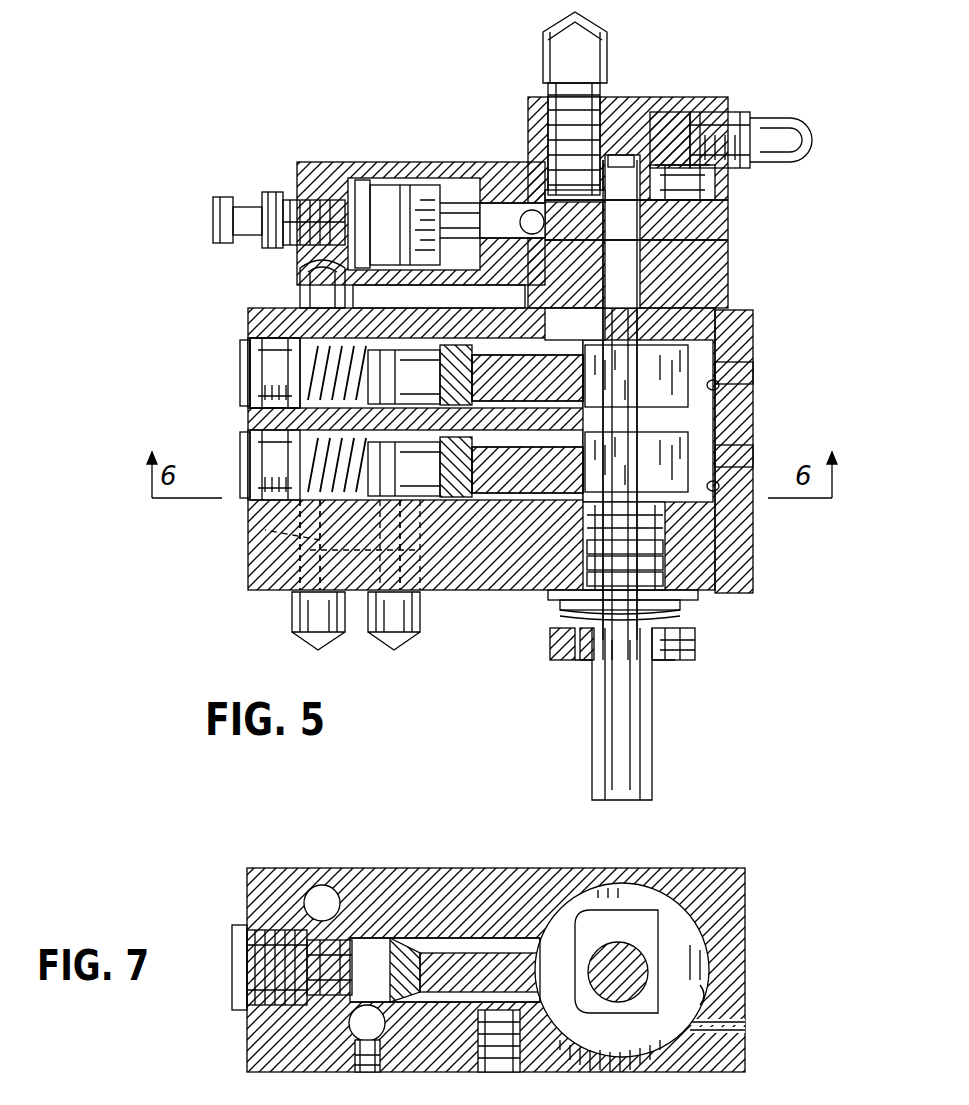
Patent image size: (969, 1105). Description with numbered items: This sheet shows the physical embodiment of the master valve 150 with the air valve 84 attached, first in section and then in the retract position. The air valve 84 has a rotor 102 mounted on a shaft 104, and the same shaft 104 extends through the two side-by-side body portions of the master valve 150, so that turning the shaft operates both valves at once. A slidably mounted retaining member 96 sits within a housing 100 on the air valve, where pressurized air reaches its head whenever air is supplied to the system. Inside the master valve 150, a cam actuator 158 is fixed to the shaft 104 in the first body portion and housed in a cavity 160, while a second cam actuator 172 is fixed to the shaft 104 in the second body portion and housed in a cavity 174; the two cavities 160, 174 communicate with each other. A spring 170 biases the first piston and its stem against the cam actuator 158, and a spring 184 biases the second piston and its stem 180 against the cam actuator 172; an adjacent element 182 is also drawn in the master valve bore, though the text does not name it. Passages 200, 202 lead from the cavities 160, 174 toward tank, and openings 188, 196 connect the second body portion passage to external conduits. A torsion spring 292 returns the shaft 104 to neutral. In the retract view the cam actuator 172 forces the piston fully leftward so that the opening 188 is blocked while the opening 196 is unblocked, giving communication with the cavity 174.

In FIG. 5, the air valve 84 is at (672, 60).
In FIG. 5, the retaining member 96 is at (474, 195).
In FIG. 5, the housing 100 is at (405, 133).
In FIG. 5, the rotor 102 is at (722, 222).
In FIG. 5, the shaft 104 is at (642, 303).
In FIG. 5, the master valve 150 is at (208, 383).
In FIG. 5, the cam actuator 158 is at (690, 352).
In FIG. 5, the cavity 160 is at (719, 385).
In FIG. 5, the spring 170 is at (300, 318).
In FIG. 5, the cam actuator 172 is at (690, 442).
In FIG. 7, the cam actuator 172 is at (636, 912).
In FIG. 5, the cavity 174 is at (718, 490).
In FIG. 7, the cavity 174 is at (705, 992).
In FIG. 5, the stem 180 is at (478, 492).
In FIG. 7, the stem 180 is at (445, 935).
In FIG. 5, the spool 182 is at (572, 482).
In FIG. 7, the spool 182 is at (540, 950).
In FIG. 5, the spring 184 is at (305, 506).
In FIG. 5, the opening 188 is at (285, 555).
In FIG. 7, the opening 188 is at (365, 1062).
In FIG. 5, the opening 196 is at (441, 560).
In FIG. 7, the opening 196 is at (495, 1045).
In FIG. 5, the passage 200 is at (745, 372).
In FIG. 5, the passage 202 is at (750, 452).
In FIG. 5, the torsion spring 292 is at (665, 622).